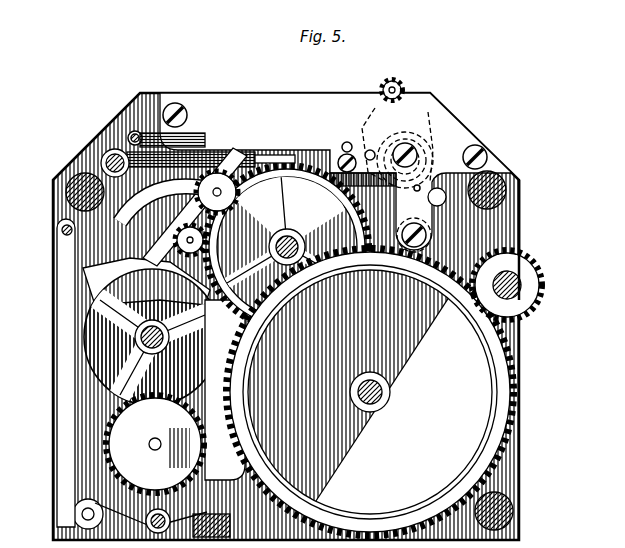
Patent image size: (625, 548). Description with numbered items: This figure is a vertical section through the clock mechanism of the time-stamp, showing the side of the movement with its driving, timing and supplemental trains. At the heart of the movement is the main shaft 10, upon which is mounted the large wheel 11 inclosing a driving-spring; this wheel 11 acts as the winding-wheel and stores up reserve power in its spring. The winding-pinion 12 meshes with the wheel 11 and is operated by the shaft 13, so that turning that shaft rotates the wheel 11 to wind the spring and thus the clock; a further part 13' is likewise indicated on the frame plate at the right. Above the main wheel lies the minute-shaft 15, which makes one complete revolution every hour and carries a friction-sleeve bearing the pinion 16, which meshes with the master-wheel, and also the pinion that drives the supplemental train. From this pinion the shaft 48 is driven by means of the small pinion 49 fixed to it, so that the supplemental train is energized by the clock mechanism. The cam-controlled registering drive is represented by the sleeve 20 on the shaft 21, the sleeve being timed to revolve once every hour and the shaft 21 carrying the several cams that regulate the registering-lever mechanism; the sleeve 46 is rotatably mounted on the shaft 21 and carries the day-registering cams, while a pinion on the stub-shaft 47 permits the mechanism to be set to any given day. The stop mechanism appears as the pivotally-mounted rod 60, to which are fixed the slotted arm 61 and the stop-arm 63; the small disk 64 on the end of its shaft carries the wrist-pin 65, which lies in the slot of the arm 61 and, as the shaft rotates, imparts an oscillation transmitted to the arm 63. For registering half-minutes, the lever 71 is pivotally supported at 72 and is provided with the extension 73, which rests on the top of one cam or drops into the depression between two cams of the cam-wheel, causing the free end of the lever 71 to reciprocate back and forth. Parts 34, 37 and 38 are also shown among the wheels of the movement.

The main shaft 10 is at (383, 392).
The wheel 11 is at (480, 388).
The winding-pinion 12 is at (545, 285).
The shaft 13 is at (546, 258).
The frame plate 13' is at (540, 240).
The minute-shaft 15 is at (340, 280).
The pinion 16 is at (300, 232).
The sleeve 20 is at (168, 335).
The shaft 21 is at (156, 348).
The gear rim 34 is at (354, 225).
The lever 37 is at (195, 392).
The cam wheel 38 is at (152, 343).
The sleeve 46 is at (155, 444).
The stub-shaft 47 is at (149, 444).
The shaft 48 is at (217, 194).
The small pinion 49 is at (167, 204).
The pivotally-mounted rod or shaft 60 is at (108, 156).
The arm 61 is at (183, 215).
The arm 63 is at (137, 208).
The small disk 64 is at (238, 160).
The wrist-pin 65 is at (255, 162).
The lever 71 is at (57, 275).
The pivot 72 is at (62, 230).
The extension or arm 73 is at (146, 285).